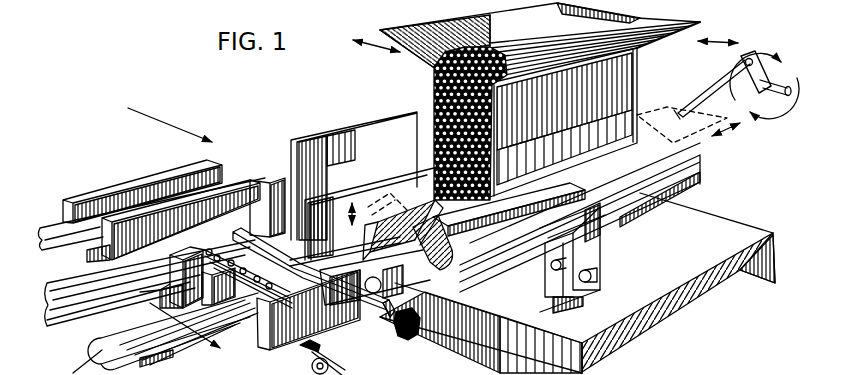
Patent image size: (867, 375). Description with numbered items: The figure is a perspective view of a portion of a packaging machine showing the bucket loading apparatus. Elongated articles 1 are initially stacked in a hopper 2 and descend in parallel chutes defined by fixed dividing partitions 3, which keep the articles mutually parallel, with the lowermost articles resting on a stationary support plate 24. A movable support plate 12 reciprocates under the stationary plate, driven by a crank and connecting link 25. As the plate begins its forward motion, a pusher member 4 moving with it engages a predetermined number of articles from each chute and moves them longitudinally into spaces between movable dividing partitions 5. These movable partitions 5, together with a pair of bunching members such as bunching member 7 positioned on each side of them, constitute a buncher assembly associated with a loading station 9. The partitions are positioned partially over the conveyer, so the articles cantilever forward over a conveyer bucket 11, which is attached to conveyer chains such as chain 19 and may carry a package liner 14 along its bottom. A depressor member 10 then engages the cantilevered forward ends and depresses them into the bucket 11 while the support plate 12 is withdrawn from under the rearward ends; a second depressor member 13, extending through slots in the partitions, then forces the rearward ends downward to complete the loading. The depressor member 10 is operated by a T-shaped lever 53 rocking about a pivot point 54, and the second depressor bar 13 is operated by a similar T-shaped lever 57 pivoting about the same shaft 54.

The elongated articles 1 is at (660, 14).
The hopper 2 is at (380, 30).
The fixed dividing partitions 3 is at (434, 95).
The pusher member 4 is at (478, 210).
The movable dividing partitions 5 is at (290, 173).
The bunching member 7 is at (443, 235).
The loading station 9 is at (420, 22).
The depressor member 10 is at (320, 284).
The bucket 11 is at (125, 190).
The support plate 12 is at (686, 147).
The second depressor member 13 is at (445, 238).
The package liner 14 is at (151, 262).
The chain 19 is at (411, 340).
The stationary support plate 24 is at (690, 183).
The crank and connecting link 25 is at (710, 73).
The T-shaped lever 53 is at (583, 232).
The pivot point 54 is at (598, 272).
The T-shaped lever 57 is at (553, 217).